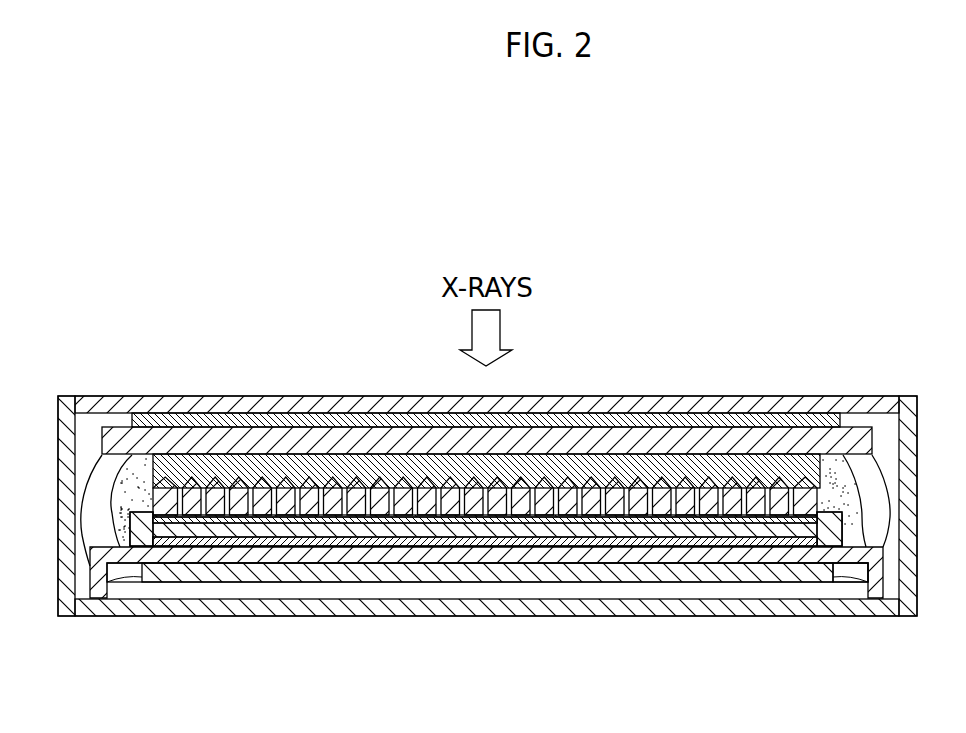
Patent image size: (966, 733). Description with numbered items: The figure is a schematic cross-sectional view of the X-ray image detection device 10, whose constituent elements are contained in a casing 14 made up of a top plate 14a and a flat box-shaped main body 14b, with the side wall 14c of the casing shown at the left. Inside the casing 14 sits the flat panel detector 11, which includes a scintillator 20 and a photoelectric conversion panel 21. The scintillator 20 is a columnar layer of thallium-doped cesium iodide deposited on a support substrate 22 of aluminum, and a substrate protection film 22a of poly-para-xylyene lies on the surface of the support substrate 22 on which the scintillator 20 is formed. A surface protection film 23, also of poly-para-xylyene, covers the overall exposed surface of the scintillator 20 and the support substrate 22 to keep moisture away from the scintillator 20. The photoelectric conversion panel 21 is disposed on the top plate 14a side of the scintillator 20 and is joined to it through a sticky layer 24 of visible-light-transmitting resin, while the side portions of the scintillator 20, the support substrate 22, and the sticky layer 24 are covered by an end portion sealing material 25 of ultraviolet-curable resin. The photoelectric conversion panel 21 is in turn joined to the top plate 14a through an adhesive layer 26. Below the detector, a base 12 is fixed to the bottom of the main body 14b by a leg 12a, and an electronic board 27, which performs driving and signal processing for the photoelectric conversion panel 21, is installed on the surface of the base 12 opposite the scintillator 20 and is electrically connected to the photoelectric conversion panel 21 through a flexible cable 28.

The X-ray image detection device 10 is at (488, 501).
The flat panel detector 11 is at (872, 474).
The base 12 is at (358, 555).
The leg 12a is at (868, 588).
The casing 14 is at (485, 516).
The top plate 14a is at (184, 402).
The main body 14b is at (183, 612).
The side wall 14c is at (85, 400).
The scintillator 20 is at (690, 500).
The photoelectric conversion panel 21 is at (595, 433).
The support substrate 22 is at (532, 528).
The substrate protection film 22a is at (436, 522).
The surface protection film 23 is at (155, 496).
The sticky layer 24 is at (313, 458).
The end portion sealing material 25 is at (857, 504).
The adhesive layer 26 is at (370, 418).
The electronic board 27 is at (265, 573).
The flexible cable 28 is at (101, 458).